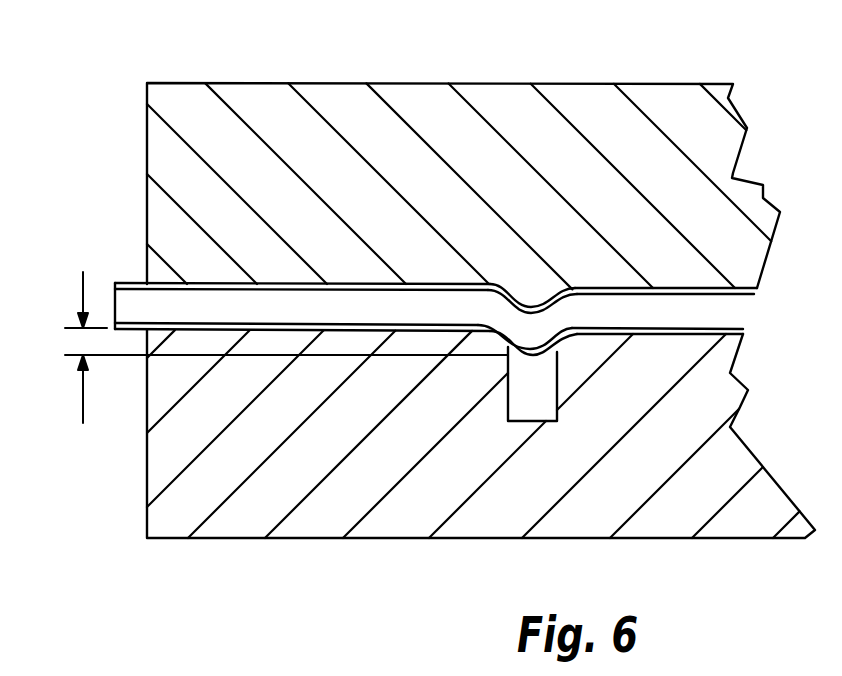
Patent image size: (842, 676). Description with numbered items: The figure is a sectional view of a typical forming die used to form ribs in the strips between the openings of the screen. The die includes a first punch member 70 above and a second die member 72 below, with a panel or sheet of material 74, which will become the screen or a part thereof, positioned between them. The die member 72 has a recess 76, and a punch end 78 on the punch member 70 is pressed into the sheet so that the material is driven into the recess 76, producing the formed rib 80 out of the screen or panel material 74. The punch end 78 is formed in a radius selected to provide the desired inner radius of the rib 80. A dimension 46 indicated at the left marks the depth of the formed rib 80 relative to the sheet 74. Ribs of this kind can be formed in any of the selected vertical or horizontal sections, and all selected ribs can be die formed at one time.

The first punch member 70 is at (308, 162).
The second die member 72 is at (315, 516).
The panel or sheet of material 74 is at (200, 300).
The recess 76 is at (541, 391).
The punch end 78 is at (542, 283).
The formed rib 80 is at (522, 337).
The dimple depth 46 is at (83, 392).